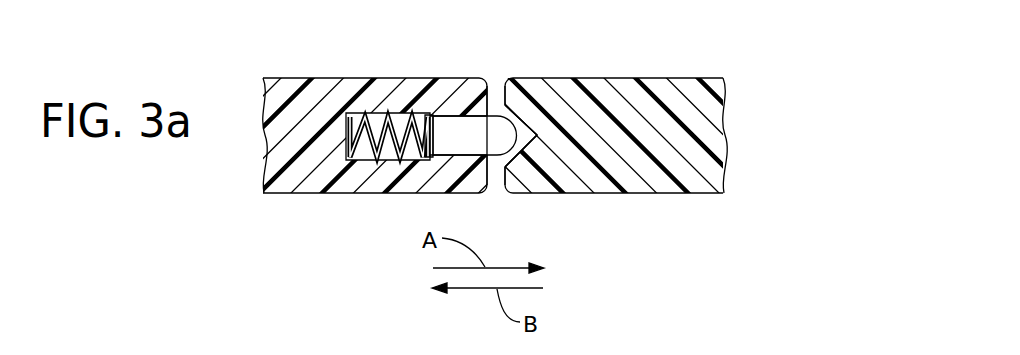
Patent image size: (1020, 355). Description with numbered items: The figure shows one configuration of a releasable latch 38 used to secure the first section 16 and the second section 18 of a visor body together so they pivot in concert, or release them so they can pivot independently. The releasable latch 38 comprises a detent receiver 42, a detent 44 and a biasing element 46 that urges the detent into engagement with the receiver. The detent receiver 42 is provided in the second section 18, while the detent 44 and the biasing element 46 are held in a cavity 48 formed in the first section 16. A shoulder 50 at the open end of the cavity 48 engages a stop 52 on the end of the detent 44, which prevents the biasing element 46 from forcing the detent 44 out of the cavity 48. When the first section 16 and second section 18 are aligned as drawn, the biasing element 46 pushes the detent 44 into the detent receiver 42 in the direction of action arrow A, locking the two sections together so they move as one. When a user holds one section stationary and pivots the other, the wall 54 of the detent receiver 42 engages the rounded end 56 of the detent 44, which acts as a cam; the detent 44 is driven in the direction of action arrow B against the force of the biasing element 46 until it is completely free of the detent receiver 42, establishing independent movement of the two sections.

The first section 16 is at (298, 108).
The second section 18 is at (697, 102).
The releasable latch 38 is at (503, 61).
The detent receiver 42 is at (535, 133).
The detent 44 is at (470, 150).
The biasing element 46 is at (362, 150).
The cavity 48 is at (372, 118).
The shoulder 50 is at (496, 115).
The stop 52 is at (432, 160).
The wall 54 is at (522, 135).
The rounded end 56 is at (517, 157).